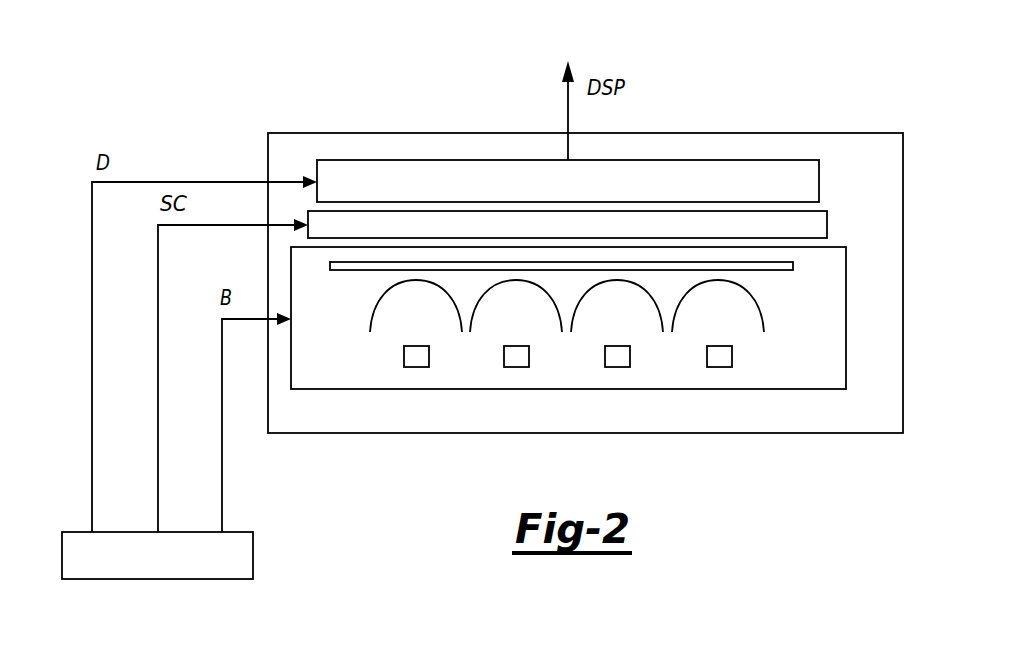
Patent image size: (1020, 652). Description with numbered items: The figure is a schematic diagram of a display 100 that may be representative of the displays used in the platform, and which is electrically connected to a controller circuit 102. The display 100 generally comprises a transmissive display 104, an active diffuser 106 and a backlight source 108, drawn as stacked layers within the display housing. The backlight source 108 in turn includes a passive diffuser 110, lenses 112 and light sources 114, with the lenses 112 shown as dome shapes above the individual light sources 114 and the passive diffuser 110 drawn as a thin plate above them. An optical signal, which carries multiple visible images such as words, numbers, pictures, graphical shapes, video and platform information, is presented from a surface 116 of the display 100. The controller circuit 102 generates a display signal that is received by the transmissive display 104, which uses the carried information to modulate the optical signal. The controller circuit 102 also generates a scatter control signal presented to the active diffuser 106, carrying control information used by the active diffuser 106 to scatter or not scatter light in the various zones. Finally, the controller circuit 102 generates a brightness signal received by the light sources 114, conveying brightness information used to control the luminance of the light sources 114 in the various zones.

The display 100 is at (343, 133).
The controller circuit 102 is at (253, 555).
The transmissive display 104 is at (819, 180).
The active diffuser 106 is at (827, 224).
The backlight source 108 is at (846, 319).
The passive diffuser 110 is at (787, 272).
The lenses 112 is at (377, 310).
The light sources 114 is at (416, 367).
The surface 116 is at (786, 133).